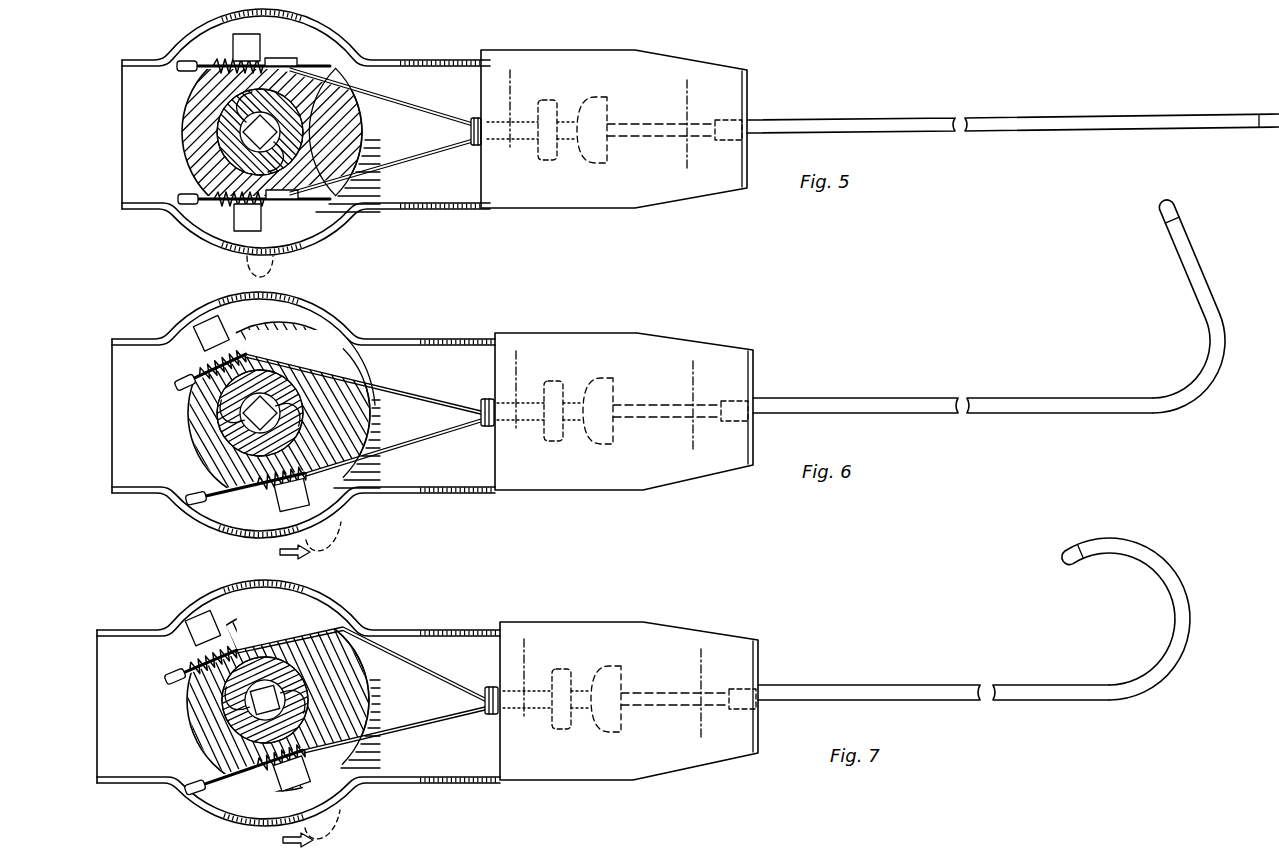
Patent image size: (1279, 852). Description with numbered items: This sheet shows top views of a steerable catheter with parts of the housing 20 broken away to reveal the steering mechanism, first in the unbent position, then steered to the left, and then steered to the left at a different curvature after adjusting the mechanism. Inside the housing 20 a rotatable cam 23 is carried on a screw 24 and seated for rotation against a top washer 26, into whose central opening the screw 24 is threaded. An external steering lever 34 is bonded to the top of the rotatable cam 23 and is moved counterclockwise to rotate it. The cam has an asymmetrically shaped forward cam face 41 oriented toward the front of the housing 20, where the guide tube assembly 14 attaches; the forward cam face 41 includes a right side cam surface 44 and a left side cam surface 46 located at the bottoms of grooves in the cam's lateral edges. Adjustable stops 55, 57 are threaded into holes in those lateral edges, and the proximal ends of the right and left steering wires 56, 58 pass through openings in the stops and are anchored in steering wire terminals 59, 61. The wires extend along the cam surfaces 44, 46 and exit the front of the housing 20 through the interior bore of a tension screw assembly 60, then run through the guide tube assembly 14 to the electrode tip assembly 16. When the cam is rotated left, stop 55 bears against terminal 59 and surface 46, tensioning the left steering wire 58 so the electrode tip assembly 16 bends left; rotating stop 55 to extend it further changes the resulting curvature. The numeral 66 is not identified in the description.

In FIG. 5, the guide tube assembly 14 is at (874, 121).
In FIG. 6, the guide tube assembly 14 is at (912, 400).
In FIG. 7, the guide tube assembly 14 is at (930, 688).
In FIG. 5, the electrode tip assembly 16 is at (1278, 108).
In FIG. 6, the electrode tip assembly 16 is at (1162, 200).
In FIG. 7, the electrode tip assembly 16 is at (1065, 568).
In FIG. 5, the housing 20 is at (137, 212).
In FIG. 6, the housing 20 is at (138, 322).
In FIG. 7, the housing 20 is at (298, 703).
In FIG. 5, the rotatable cam 23 is at (181, 131).
In FIG. 6, the rotatable cam 23 is at (190, 420).
In FIG. 7, the rotatable cam 23 is at (346, 656).
In FIG. 6, the screw 24 is at (272, 410).
In FIG. 6, the top washer 26 is at (248, 428).
In FIG. 5, the steering lever 34 is at (276, 263).
In FIG. 6, the steering lever 34 is at (341, 522).
In FIG. 7, the steering lever 34 is at (338, 810).
In FIG. 5, the forward cam face 41 is at (357, 129).
In FIG. 6, the forward cam face 41 is at (356, 360).
In FIG. 7, the forward cam face 41 is at (356, 682).
In FIG. 5, the right side cam surface 44 is at (332, 200).
In FIG. 6, the right side cam surface 44 is at (358, 421).
In FIG. 5, the left side cam surface 46 is at (344, 83).
In FIG. 6, the left side cam surface 46 is at (348, 376).
In FIG. 7, the left side cam surface 46 is at (338, 632).
In FIG. 5, the adjustable stop 55 is at (219, 36).
In FIG. 6, the adjustable stop 55 is at (188, 335).
In FIG. 7, the adjustable stop 55 is at (178, 630).
In FIG. 5, the right catheter steering wire 56 is at (427, 156).
In FIG. 6, the right catheter steering wire 56 is at (450, 428).
In FIG. 7, the right catheter steering wire 56 is at (433, 720).
In FIG. 5, the adjustable stop 57 is at (206, 222).
In FIG. 6, the adjustable stop 57 is at (249, 520).
In FIG. 7, the adjustable stop 57 is at (257, 797).
In FIG. 5, the left catheter steering wire 58 is at (440, 112).
In FIG. 6, the left catheter steering wire 58 is at (447, 400).
In FIG. 7, the left catheter steering wire 58 is at (438, 676).
In FIG. 5, the steering wire terminal 59 is at (180, 62).
In FIG. 6, the steering wire terminal 59 is at (176, 384).
In FIG. 7, the steering wire terminal 59 is at (165, 677).
In FIG. 5, the tension screw assembly 60 is at (601, 97).
In FIG. 6, the tension screw assembly 60 is at (606, 379).
In FIG. 7, the tension screw assembly 60 is at (603, 732).
In FIG. 5, the steering wire terminal 61 is at (178, 199).
In FIG. 6, the steering wire terminal 61 is at (187, 500).
In FIG. 7, the steering wire terminal 61 is at (190, 782).
In FIG. 5, the coupling 66 is at (740, 120).
In FIG. 6, the coupling 66 is at (738, 410).
In FIG. 7, the coupling 66 is at (738, 700).